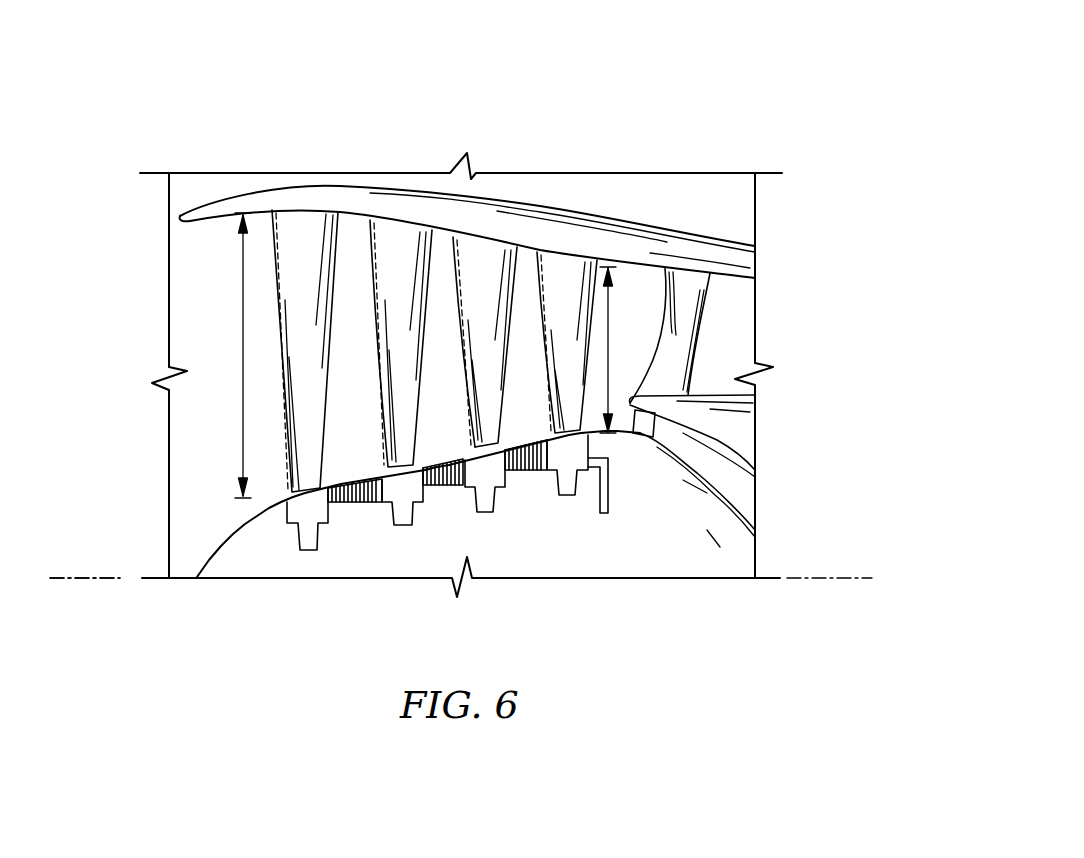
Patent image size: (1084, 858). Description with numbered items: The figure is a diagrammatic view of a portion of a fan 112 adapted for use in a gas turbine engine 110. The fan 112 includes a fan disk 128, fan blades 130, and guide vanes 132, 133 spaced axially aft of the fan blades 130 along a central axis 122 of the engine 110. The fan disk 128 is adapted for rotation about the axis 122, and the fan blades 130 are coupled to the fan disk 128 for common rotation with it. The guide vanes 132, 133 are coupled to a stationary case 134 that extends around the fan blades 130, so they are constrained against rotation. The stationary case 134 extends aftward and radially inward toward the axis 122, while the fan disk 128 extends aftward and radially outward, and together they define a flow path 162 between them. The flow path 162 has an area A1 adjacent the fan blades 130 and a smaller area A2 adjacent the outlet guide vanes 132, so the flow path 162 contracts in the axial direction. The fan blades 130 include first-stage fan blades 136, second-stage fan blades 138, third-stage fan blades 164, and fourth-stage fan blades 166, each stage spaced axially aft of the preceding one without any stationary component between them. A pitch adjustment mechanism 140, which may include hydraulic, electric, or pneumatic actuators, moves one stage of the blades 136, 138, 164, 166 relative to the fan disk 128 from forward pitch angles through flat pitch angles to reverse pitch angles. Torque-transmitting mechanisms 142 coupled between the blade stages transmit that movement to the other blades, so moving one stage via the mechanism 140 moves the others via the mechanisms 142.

The gas turbine engine 110 is at (730, 55).
The fan 112 is at (722, 160).
The central axis 122 is at (62, 575).
The fan disk 128 is at (350, 560).
The fan blades 130 is at (447, 275).
The guide vane 132 is at (700, 315).
The guide vane 133 is at (660, 432).
The stationary case 134 is at (538, 227).
The first-stage fan blades 136 is at (298, 258).
The second-stage fan blades 138 is at (402, 255).
The pitch adjustment mechanism 140 is at (612, 507).
The torque-transmitting mechanisms 142 is at (342, 483).
The flow path 162 is at (360, 275).
The third-stage fan blades 164 is at (482, 287).
The fourth-stage fan blades 166 is at (567, 287).
The area A1 is at (240, 330).
The area A2 is at (608, 323).